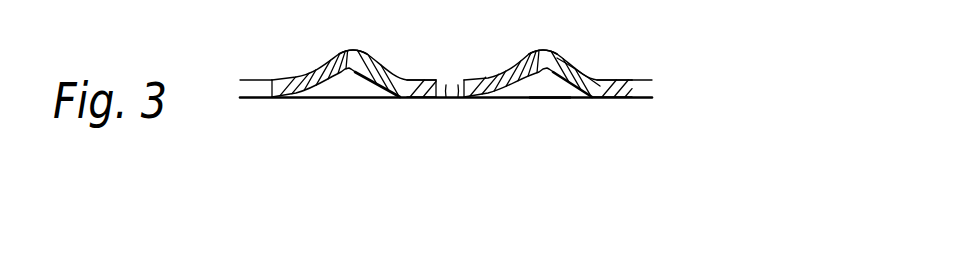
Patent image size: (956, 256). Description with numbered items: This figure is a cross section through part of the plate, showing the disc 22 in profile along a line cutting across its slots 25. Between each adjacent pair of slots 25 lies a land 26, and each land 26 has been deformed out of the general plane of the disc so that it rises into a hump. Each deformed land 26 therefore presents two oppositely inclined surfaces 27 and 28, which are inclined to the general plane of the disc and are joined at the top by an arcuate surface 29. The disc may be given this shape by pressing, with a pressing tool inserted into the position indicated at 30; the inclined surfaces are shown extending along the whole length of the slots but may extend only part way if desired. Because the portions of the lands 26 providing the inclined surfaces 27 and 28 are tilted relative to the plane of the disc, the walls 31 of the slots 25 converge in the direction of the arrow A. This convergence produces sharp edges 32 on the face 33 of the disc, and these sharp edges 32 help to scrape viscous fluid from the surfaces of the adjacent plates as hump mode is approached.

The closure / lid assembly 22 is at (309, 110).
The slot 25 is at (249, 81).
The land 26 is at (367, 97).
The inclined surface 27 is at (405, 75).
The inclined surface 28 is at (297, 78).
The arcuate surface 29 is at (357, 50).
The pressing tool position 30 is at (562, 71).
The slot wall 31 is at (458, 97).
The sharp edge 32 is at (437, 101).
The face of the disc 33 is at (548, 100).
The arrow A is at (449, 161).